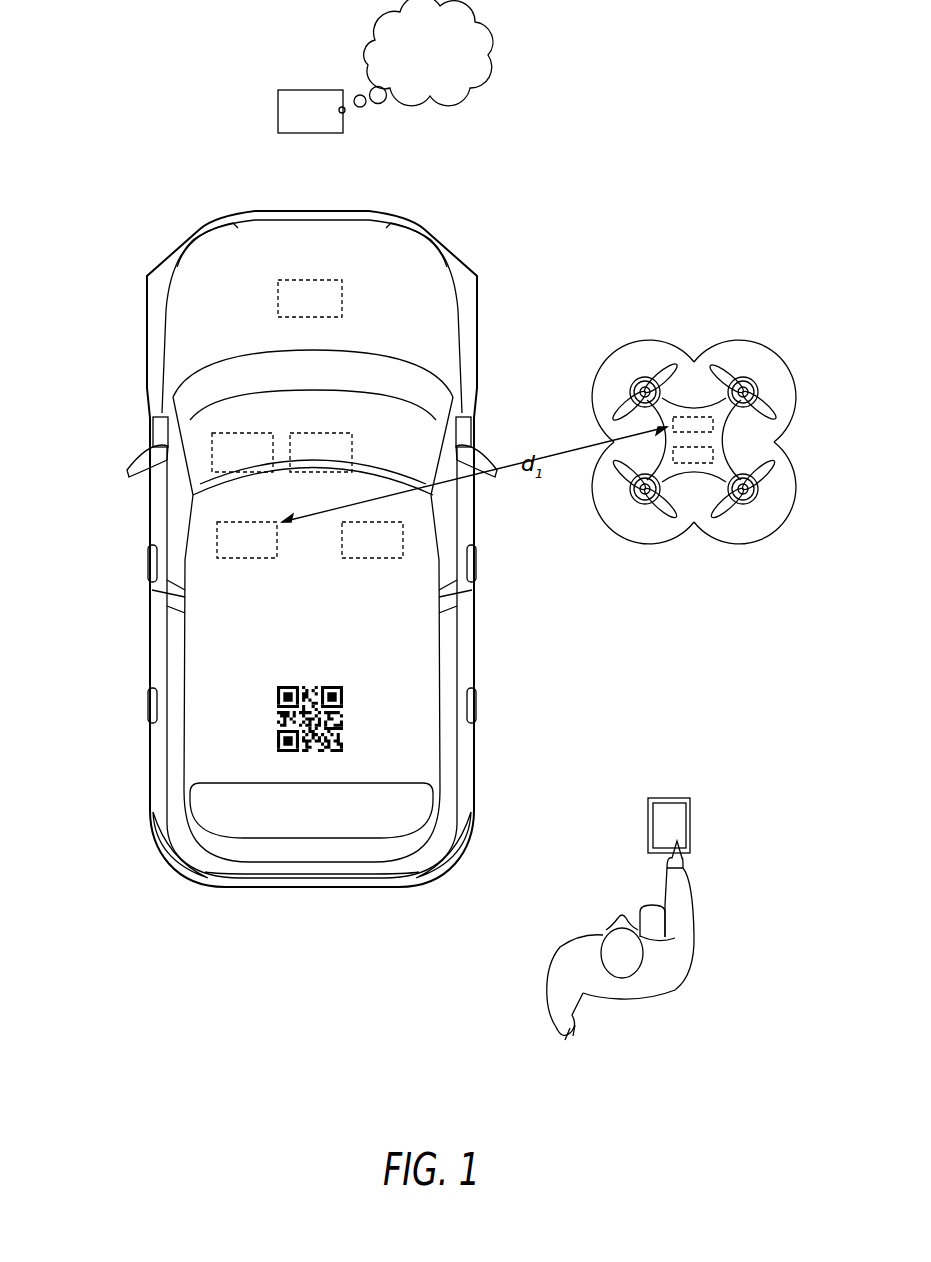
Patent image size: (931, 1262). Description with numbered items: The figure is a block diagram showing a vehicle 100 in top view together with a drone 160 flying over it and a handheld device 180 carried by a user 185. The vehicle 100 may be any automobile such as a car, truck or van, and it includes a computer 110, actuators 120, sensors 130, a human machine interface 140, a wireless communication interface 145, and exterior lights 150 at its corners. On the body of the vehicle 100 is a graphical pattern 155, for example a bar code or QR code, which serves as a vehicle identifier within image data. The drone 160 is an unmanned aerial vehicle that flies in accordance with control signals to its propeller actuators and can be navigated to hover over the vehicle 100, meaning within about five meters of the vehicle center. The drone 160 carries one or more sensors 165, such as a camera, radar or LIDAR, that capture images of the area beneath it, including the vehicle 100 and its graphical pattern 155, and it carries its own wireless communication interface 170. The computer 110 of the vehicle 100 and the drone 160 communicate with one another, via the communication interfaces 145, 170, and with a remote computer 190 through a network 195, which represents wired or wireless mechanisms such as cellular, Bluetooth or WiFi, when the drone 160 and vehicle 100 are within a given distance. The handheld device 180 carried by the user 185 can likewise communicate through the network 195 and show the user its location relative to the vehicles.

The vehicle 100 is at (319, 635).
The computer 110 is at (372, 540).
The actuator(s) 120 is at (310, 298).
The sensor(s) 130 is at (321, 452).
The human machine interface (HMI) 140 is at (242, 452).
The wireless communication interface 145 is at (247, 540).
The exterior lights 150 is at (198, 243).
The graphical pattern 155 is at (275, 695).
The drone 160 is at (642, 340).
The sensor 165 is at (694, 464).
The wireless communication interface 170 is at (694, 417).
The handheld device 180 is at (678, 796).
The user 185 is at (640, 985).
The remote computer 190 is at (332, 110).
The network 195 is at (428, 53).